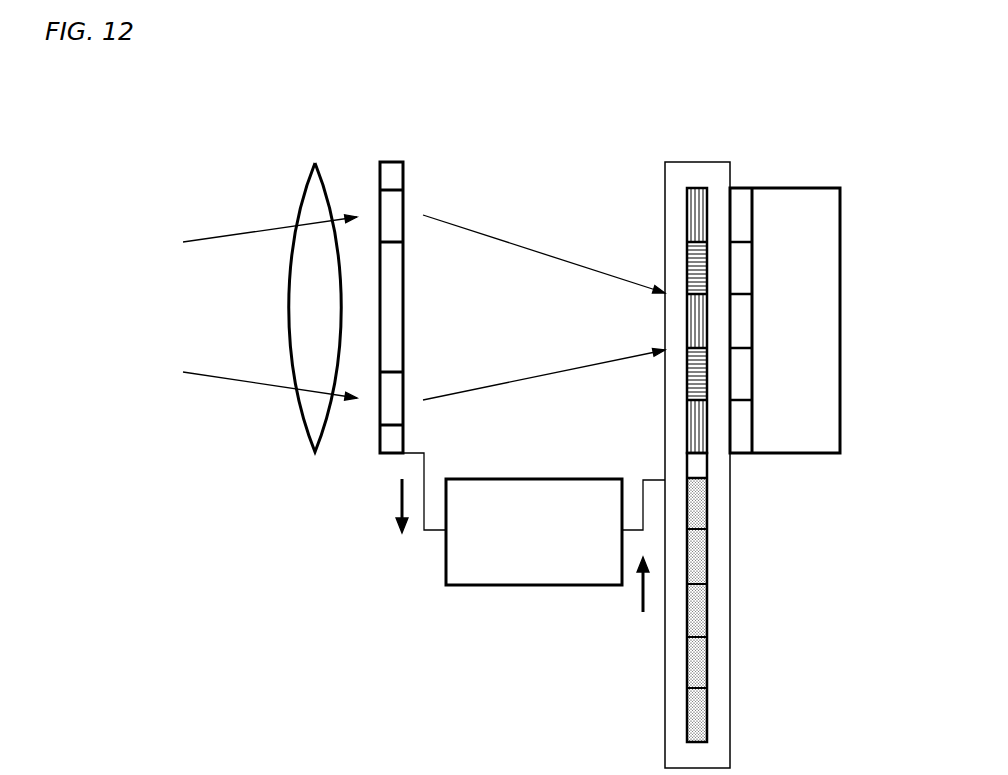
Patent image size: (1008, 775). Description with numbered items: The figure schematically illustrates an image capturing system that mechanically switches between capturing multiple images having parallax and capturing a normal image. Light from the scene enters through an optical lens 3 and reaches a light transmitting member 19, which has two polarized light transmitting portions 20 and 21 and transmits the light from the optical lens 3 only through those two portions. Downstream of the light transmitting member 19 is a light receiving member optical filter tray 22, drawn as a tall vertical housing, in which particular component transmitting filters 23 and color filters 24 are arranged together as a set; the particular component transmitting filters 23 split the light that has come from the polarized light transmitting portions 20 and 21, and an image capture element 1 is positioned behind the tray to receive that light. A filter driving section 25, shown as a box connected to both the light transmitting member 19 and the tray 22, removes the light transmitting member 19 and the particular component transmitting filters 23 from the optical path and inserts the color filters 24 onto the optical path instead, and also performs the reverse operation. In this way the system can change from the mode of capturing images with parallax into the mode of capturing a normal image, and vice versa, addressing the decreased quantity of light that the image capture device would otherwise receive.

The detector 1 is at (817, 322).
The optical lens 3 is at (315, 425).
The light transmitting member 19 is at (380, 453).
The polarized light transmitting portion 20 is at (405, 215).
The polarized light transmitting portion 21 is at (403, 400).
The light receiving member optical filter tray 22 is at (665, 162).
The particular component transmitting filters 23 is at (707, 189).
The color filters 24 is at (710, 712).
The filter driving section 25 is at (513, 557).